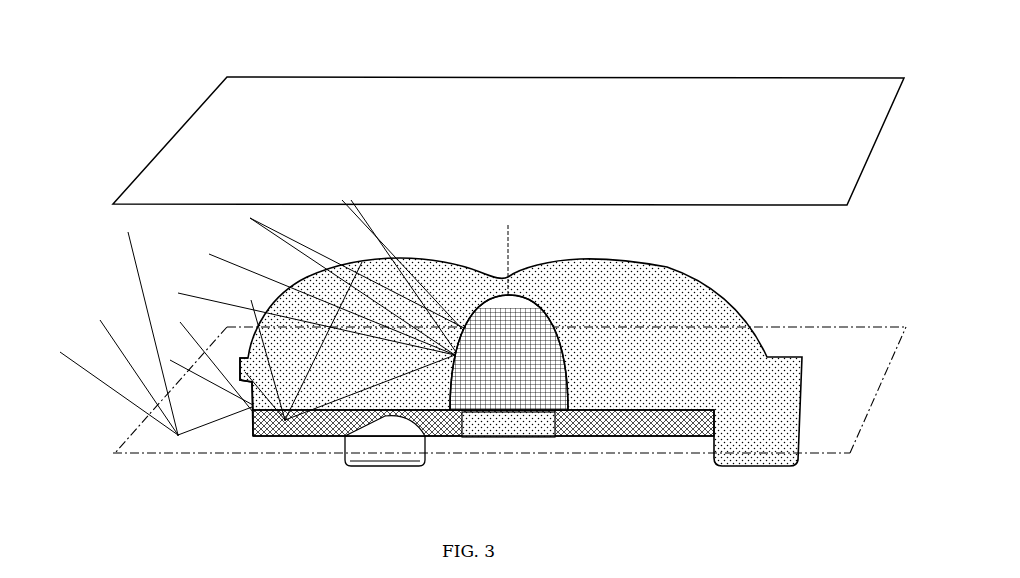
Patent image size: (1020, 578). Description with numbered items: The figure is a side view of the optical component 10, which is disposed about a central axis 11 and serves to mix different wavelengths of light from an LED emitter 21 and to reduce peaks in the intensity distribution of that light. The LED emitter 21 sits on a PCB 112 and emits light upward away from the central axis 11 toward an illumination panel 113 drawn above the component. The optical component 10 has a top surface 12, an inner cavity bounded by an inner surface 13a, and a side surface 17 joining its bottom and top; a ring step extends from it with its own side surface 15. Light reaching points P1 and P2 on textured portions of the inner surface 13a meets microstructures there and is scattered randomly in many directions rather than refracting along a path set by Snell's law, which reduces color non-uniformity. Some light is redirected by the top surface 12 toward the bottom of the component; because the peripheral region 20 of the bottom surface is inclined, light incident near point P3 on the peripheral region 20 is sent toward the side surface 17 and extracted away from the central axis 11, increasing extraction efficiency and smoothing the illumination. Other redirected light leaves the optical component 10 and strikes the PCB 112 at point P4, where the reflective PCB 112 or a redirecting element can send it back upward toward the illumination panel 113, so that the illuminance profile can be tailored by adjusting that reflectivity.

The optical component 10 is at (153, 110).
The illumination panel 113 is at (465, 97).
The top surface 12 is at (707, 278).
The central axis 11 is at (507, 253).
The inner surface 13a is at (563, 352).
The peripheral region 20 is at (655, 434).
The LED emitter 21 is at (508, 424).
The PCB 112 is at (425, 453).
The side surface 15 is at (237, 383).
The side surface 17 is at (253, 432).
The point P1 is at (453, 360).
The point P2 is at (465, 327).
The point P3 is at (288, 437).
The point P4 is at (173, 443).